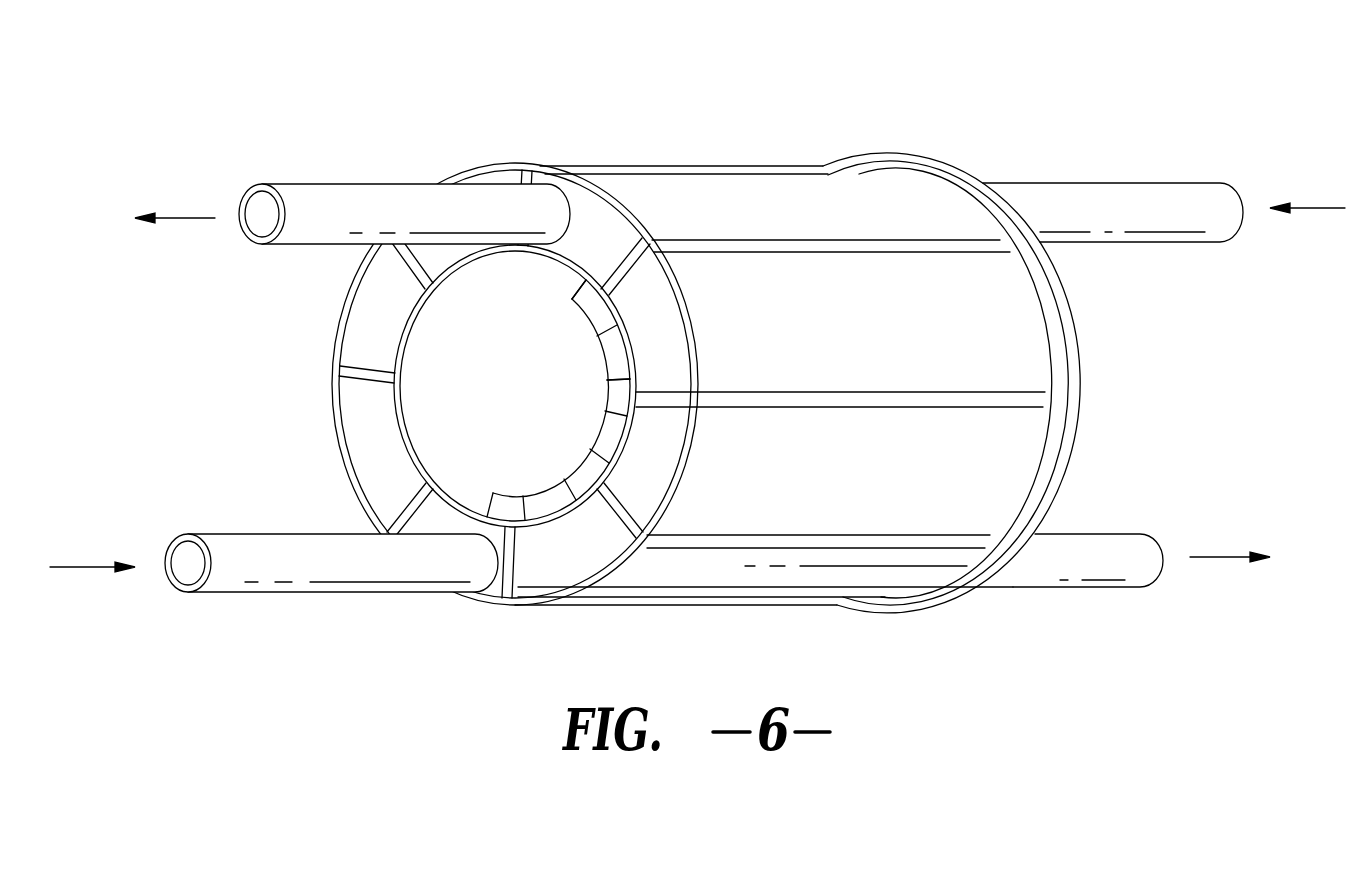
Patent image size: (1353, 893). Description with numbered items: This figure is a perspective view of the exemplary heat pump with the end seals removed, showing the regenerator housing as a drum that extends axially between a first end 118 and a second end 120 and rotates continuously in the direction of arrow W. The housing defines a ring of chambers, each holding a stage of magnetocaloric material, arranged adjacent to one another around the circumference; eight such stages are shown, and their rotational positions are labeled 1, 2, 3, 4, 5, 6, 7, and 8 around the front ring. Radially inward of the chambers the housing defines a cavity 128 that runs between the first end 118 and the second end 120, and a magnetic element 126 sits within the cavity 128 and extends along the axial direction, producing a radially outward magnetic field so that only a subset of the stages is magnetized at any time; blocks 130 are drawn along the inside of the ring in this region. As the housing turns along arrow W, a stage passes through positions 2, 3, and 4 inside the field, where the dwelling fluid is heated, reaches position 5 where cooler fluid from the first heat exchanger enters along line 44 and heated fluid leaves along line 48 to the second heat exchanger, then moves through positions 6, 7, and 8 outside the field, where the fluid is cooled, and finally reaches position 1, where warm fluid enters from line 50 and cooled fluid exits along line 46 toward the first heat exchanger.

The first end 118 is at (440, 158).
The second end 120 is at (863, 130).
The magnetic element 126 is at (562, 280).
The cavity 128 is at (420, 401).
The baffle blocks 130 is at (592, 463).
The line 44 is at (248, 562).
The line 46 is at (322, 205).
The line 48 is at (1080, 565).
The line 50 is at (1160, 198).
The position 1 is at (616, 255).
The position 2 is at (632, 343).
The position 3 is at (626, 489).
The position 4 is at (535, 562).
The position 5 is at (430, 520).
The position 6 is at (367, 414).
The position 7 is at (405, 277).
The position 8 is at (505, 178).
The arrow W is at (1108, 470).